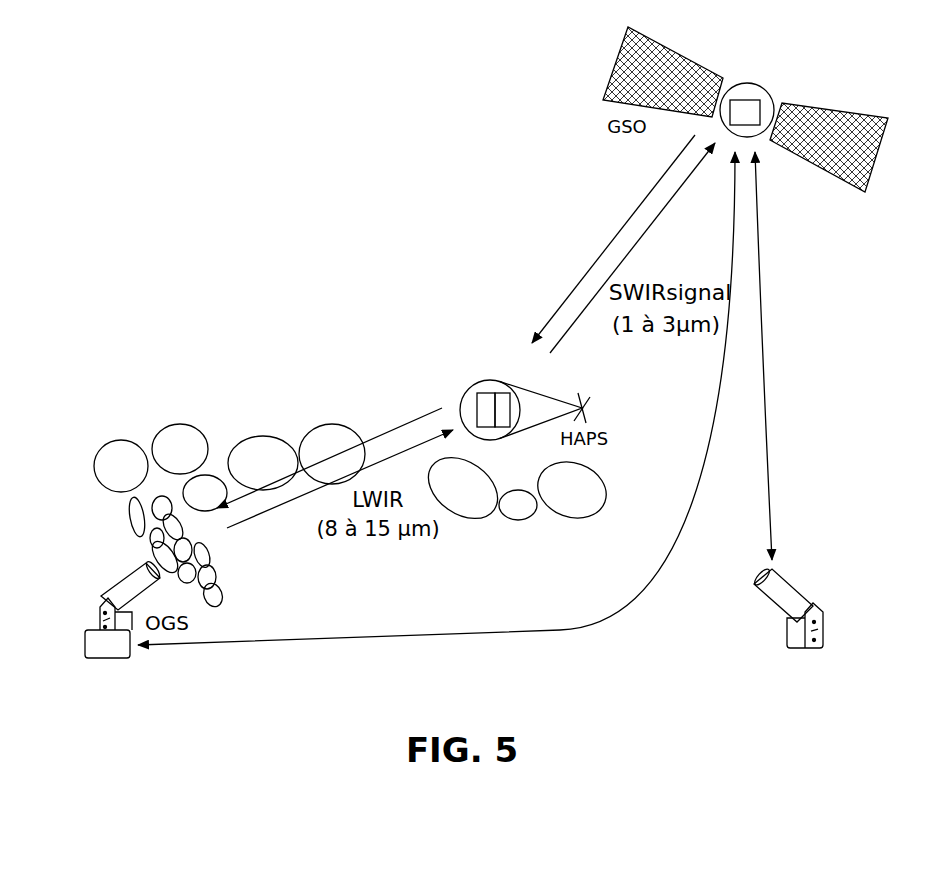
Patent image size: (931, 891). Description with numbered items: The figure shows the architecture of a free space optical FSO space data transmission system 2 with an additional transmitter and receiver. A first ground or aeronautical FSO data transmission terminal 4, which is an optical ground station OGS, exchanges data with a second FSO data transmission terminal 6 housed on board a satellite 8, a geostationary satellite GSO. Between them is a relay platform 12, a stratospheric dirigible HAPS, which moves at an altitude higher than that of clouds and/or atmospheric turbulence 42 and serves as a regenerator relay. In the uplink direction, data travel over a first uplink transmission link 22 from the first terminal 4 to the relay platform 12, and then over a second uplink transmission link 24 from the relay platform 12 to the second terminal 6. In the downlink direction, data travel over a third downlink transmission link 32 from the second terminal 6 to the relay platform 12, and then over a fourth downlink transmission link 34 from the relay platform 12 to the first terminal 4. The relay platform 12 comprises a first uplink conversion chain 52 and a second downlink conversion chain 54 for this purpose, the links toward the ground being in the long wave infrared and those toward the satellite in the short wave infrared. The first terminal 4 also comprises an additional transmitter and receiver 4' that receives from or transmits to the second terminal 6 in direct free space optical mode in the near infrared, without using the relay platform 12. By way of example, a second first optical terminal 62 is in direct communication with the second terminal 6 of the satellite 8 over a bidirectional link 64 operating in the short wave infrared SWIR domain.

The free space optical FSO space data transmission system 2 is at (200, 223).
The satellite 8 is at (745, 109).
The second free space optical FSO data transmission terminal 6 is at (760, 106).
The third downlink transmission link 32 is at (607, 248).
The second uplink transmission link 24 is at (650, 228).
The bidirectional link 64 is at (768, 343).
The relay platform 12 is at (501, 402).
The second downlink conversion chain 54 is at (476, 400).
The first uplink conversion chain 52 is at (503, 428).
The fourth downlink transmission link 34 is at (372, 442).
The first uplink transmission link 22 is at (260, 517).
The clouds and/or atmospheric turbulence 42 is at (127, 519).
The first ground or aeronautical free space optical FSO data transmission terminal 4 is at (103, 595).
The additional transmitter and receiver 4' is at (79, 641).
The second first optical terminal 62 is at (820, 612).